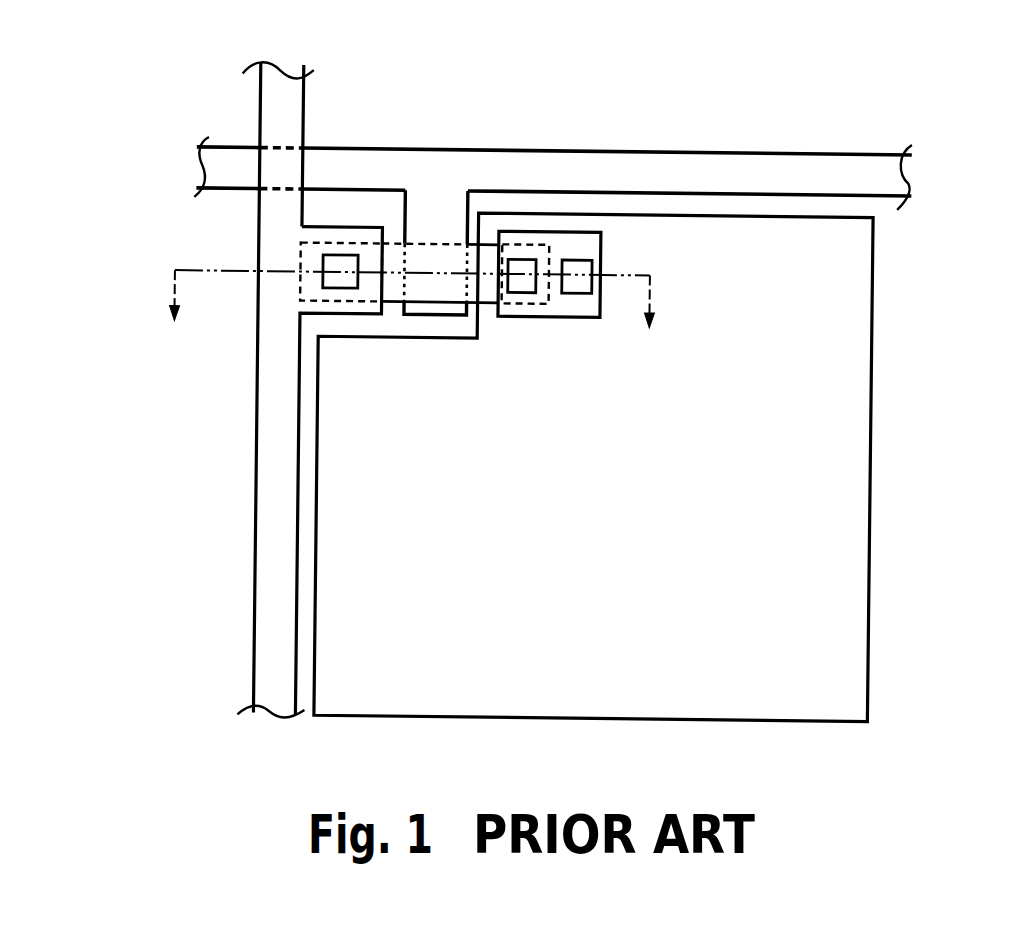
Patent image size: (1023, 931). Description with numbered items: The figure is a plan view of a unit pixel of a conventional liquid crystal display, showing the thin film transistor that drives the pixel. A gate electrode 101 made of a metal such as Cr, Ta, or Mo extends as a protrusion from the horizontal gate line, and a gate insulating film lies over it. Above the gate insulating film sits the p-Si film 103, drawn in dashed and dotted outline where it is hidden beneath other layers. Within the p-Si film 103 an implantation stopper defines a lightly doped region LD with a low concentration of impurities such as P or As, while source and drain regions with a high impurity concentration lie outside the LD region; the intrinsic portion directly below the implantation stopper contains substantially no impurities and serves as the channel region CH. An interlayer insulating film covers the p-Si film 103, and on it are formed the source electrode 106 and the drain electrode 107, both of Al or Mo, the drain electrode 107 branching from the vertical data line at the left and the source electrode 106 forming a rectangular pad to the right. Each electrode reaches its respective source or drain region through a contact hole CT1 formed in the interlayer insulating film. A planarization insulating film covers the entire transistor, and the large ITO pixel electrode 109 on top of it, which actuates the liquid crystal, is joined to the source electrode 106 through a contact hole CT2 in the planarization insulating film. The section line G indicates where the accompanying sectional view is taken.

The gate electrode 101 is at (443, 218).
The p-Si film 103 is at (390, 246).
The source electrode 106 is at (583, 247).
The drain electrode 107 is at (333, 236).
The pixel electrode 109 is at (856, 273).
The channel region CH is at (416, 254).
The lightly doped region LD is at (382, 292).
The contact hole CT1 is at (515, 263).
The contact hole CT2 is at (588, 262).
The section line G- G is at (414, 318).